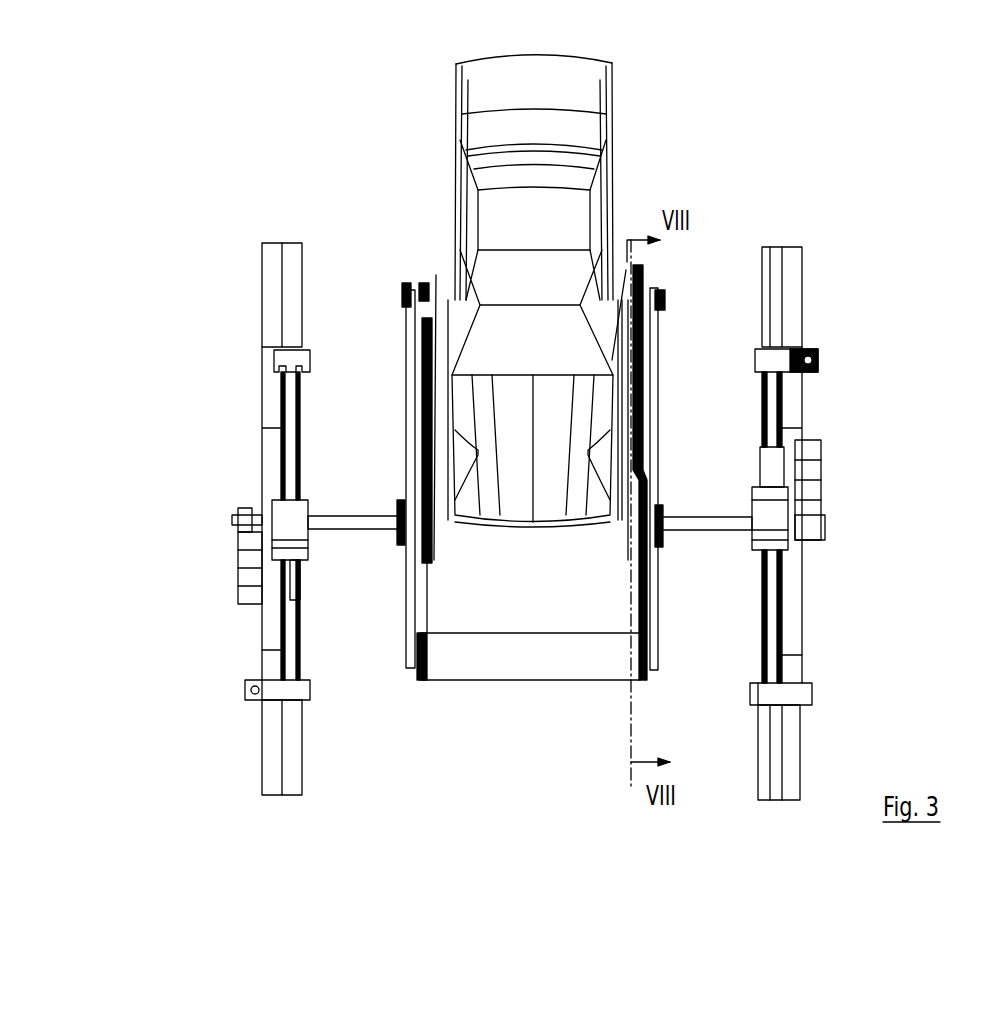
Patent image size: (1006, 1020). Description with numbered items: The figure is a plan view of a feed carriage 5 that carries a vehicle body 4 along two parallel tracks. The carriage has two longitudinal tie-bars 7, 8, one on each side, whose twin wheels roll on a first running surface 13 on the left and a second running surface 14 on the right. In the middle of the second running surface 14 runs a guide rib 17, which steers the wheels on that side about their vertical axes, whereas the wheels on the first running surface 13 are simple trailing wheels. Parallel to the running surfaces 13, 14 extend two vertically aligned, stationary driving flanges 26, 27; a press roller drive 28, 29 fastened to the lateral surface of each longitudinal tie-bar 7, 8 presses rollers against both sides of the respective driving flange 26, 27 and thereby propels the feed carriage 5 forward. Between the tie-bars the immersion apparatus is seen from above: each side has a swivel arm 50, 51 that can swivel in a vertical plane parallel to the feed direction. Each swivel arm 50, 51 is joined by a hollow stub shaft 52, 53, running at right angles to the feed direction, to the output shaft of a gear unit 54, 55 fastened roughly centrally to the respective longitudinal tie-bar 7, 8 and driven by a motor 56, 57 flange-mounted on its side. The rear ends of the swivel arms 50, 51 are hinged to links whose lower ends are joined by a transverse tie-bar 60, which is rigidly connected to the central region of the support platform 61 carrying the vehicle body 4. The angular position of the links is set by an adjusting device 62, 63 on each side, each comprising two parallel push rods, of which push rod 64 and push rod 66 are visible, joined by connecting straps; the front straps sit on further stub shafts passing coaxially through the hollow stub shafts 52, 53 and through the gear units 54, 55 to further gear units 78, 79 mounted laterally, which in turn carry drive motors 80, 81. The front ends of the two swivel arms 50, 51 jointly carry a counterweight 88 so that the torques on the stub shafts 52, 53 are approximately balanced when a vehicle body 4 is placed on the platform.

The vehicle body 4 is at (440, 139).
The feed carriage 5 is at (792, 597).
The longitudinal tie-bar 7 is at (298, 415).
The longitudinal tie-bar 8 is at (790, 416).
The first running surface 13 is at (290, 255).
The second running surface 14 is at (800, 248).
The guide rib 17 is at (776, 250).
The driving flange 26 is at (262, 298).
The driving flange 27 is at (792, 742).
The press roller drive 28 is at (244, 690).
The press roller drive 29 is at (823, 358).
The swivel arm 50 is at (410, 592).
The swivel arm 51 is at (648, 570).
The stub shaft 52 is at (352, 520).
The stub shaft 53 is at (706, 520).
The gear unit 54 is at (296, 535).
The gear unit 55 is at (730, 542).
The motor 56 is at (292, 586).
The motor 57 is at (770, 470).
The transverse tie-bar 60 is at (436, 282).
The support platform 61 is at (603, 218).
The adjusting device 62 is at (413, 386).
The adjusting device 63 is at (648, 372).
The push rod 64 is at (420, 320).
The push rod 66 is at (653, 322).
The gear unit 78 is at (262, 520).
The gear unit 79 is at (826, 527).
The drive motor 80 is at (256, 592).
The drive motor 81 is at (822, 470).
The counterweight 88 is at (538, 650).